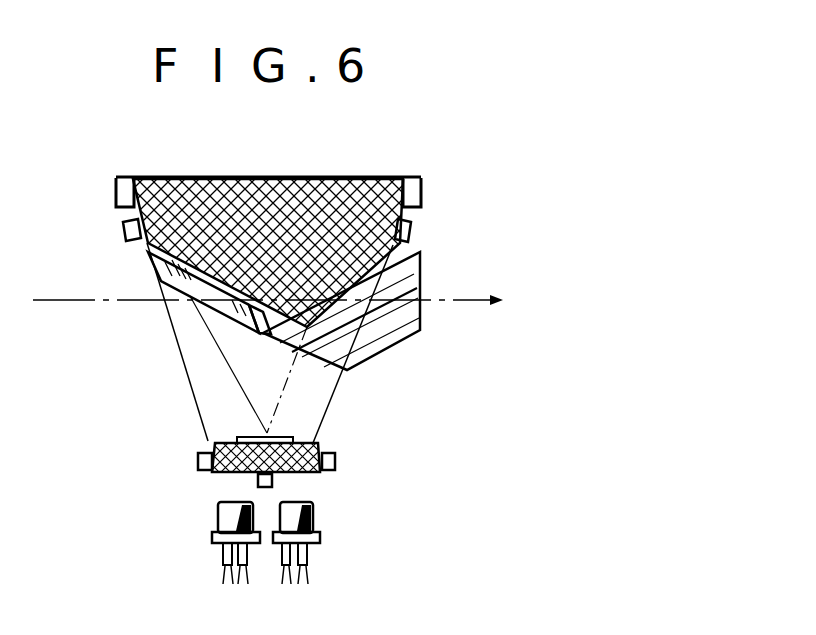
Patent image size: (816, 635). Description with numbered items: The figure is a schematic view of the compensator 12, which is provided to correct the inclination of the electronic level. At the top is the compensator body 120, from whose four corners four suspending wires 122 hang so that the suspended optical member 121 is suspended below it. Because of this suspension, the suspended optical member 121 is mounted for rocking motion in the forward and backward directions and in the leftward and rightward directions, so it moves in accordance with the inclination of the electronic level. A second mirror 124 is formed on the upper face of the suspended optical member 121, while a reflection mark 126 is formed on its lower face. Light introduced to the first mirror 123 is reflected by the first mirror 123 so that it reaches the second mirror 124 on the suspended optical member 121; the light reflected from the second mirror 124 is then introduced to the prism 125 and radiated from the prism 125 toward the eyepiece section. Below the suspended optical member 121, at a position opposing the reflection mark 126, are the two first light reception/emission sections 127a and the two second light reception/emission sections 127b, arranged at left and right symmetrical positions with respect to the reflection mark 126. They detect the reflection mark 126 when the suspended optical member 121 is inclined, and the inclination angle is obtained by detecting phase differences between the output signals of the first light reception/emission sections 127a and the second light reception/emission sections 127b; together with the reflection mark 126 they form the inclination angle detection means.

The compensator 12 is at (172, 396).
The compensator body 120 is at (296, 192).
The suspended optical member 121 is at (310, 443).
The suspending wires 122 is at (177, 340).
The first mirror 123 is at (166, 266).
The second mirror 124 is at (254, 437).
The prism 125 is at (395, 335).
The reflection mark 126 is at (272, 482).
The first light reception/emission sections 127a is at (218, 522).
The second light reception/emission sections 127b is at (315, 525).